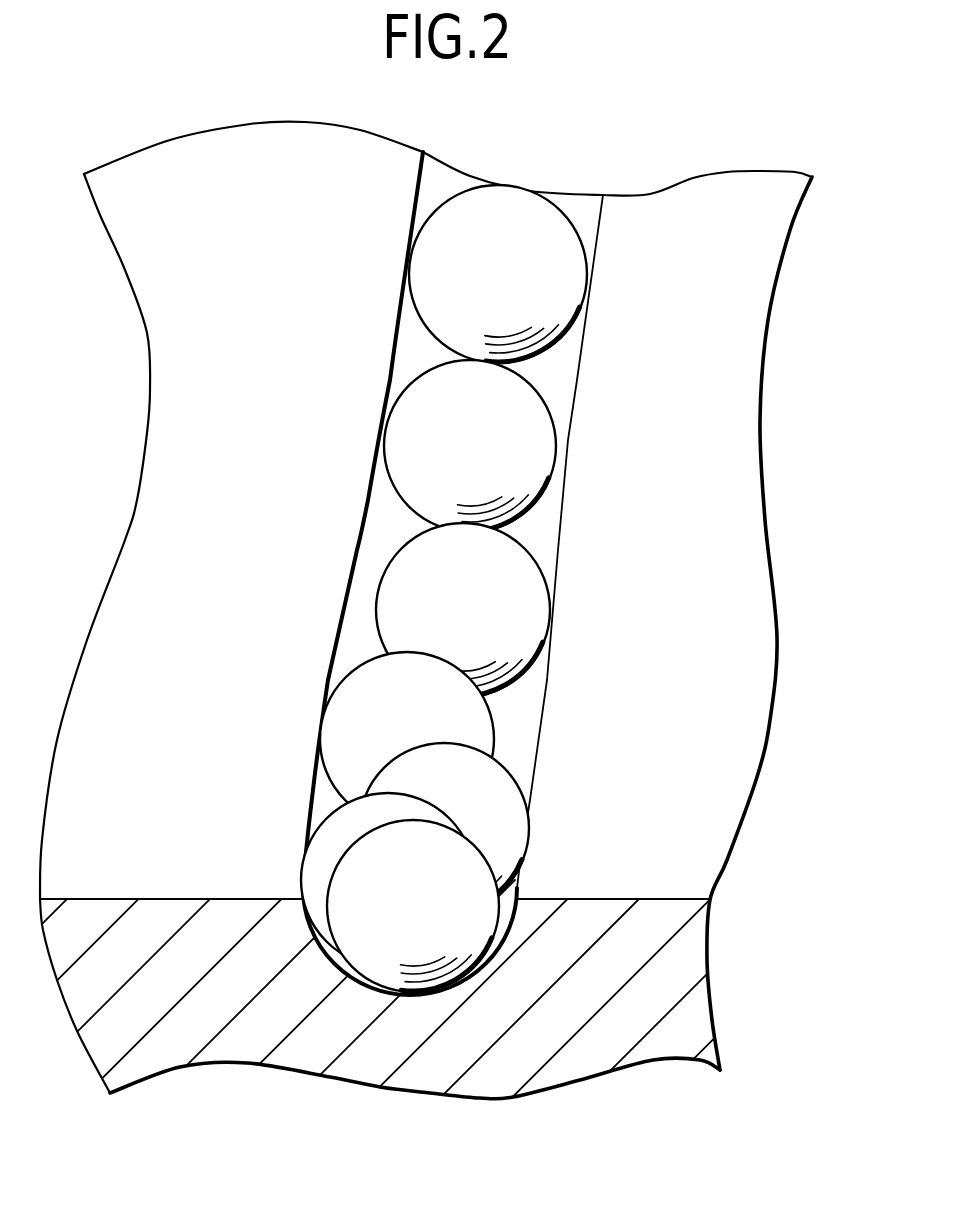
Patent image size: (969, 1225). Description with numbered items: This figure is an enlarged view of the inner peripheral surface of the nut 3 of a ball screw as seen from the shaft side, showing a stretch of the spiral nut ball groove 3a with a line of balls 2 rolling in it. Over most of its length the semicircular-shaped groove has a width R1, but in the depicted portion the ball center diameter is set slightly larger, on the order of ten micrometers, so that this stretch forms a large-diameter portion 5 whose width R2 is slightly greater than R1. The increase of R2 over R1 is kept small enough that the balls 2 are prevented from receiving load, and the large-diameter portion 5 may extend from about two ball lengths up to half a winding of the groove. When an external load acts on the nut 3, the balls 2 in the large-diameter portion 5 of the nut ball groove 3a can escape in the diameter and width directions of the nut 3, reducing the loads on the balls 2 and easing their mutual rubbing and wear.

The balls 2 is at (485, 477).
The nut 3 is at (720, 692).
The nut ball groove 3a is at (555, 365).
The large-diameter portion 5 is at (262, 575).
The width of the semicircular-shaped groove R1 is at (323, 403).
The width of the large-diameter portion R2 is at (258, 712).